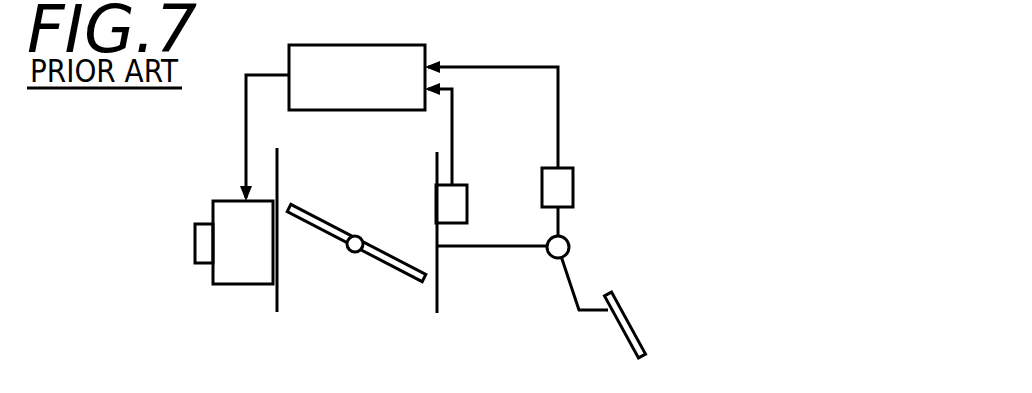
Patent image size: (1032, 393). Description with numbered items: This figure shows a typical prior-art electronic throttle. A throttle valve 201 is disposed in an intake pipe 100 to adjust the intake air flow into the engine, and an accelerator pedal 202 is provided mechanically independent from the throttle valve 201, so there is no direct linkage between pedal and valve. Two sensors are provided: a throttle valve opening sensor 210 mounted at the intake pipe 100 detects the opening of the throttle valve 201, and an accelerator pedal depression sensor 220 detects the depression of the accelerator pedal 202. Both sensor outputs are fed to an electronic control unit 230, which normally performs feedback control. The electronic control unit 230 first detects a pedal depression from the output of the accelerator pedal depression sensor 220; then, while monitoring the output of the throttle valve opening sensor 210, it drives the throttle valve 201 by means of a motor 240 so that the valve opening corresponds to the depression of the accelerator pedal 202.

The intake pipe 100 is at (437, 285).
The throttle valve 201 is at (380, 262).
The accelerator pedal 202 is at (633, 317).
The throttle valve opening sensor 210 is at (458, 184).
The accelerator pedal depression sensor 220 is at (566, 168).
The electronic control unit 230 is at (403, 45).
The motor 240 is at (235, 284).